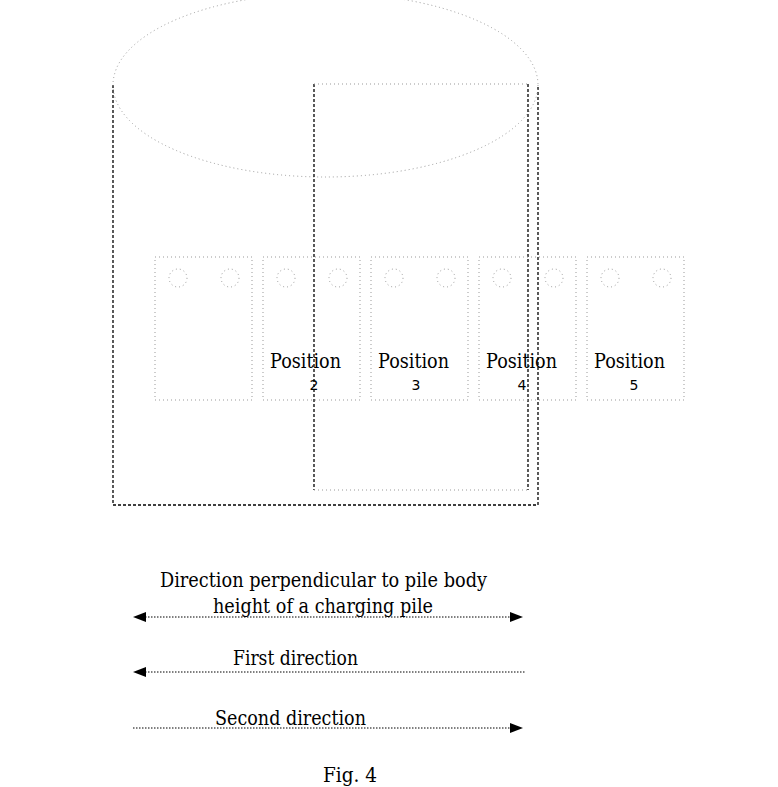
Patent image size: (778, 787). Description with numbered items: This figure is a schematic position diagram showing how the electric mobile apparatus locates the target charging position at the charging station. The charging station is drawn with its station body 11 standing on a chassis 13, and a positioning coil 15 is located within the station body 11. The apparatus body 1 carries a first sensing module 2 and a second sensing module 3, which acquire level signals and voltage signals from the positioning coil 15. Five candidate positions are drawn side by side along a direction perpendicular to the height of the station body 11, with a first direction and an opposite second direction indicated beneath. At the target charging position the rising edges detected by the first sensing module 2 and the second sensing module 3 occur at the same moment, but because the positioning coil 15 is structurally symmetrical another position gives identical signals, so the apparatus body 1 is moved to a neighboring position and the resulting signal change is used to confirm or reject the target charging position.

The apparatus body 1 is at (150, 281).
The first sensing module 2 is at (177, 280).
The second sensing module 3 is at (232, 278).
The station body 11 is at (133, 43).
The chassis 13 is at (112, 453).
The positioning coil 15 is at (312, 439).